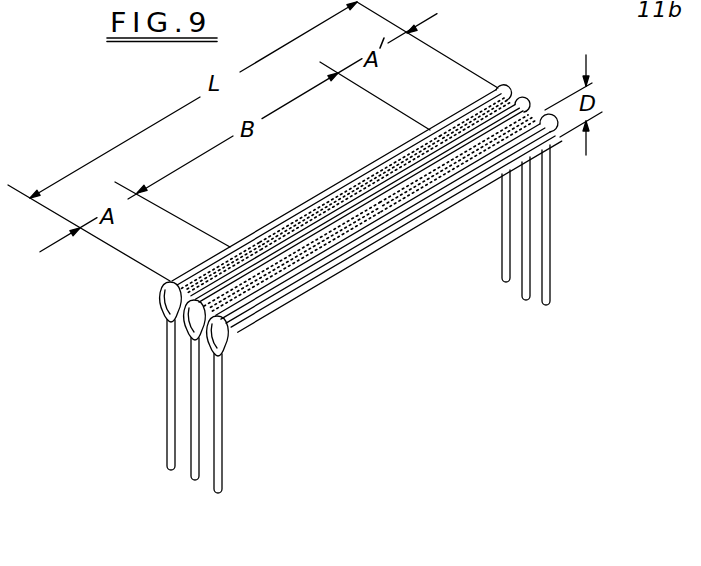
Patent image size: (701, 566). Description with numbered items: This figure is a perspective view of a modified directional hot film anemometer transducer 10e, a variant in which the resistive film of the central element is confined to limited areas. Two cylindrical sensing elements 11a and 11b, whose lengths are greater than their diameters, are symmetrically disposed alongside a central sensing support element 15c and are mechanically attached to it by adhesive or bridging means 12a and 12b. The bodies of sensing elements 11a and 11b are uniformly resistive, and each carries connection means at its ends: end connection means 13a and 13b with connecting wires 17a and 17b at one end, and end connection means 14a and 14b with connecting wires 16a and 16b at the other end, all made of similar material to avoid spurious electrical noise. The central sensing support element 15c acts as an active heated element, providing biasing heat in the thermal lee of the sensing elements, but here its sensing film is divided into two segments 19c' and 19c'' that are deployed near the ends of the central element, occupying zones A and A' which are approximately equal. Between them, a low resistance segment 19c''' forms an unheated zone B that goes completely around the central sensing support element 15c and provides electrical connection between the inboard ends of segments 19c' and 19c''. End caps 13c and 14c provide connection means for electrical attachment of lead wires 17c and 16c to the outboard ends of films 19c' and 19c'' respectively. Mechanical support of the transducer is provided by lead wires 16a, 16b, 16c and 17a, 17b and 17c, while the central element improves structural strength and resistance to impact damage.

The modified transducer embodiment 10e is at (397, 253).
The cylindrical sensing element 11a is at (266, 224).
The cylindrical sensing element 11b is at (307, 250).
The adhesive or bridging means 12a is at (308, 202).
The adhesive or bridging means 12b is at (292, 262).
The end connection means 13a is at (166, 303).
The end connection means 13b is at (230, 343).
The end cap 13c is at (191, 324).
The end connection means 14a is at (507, 87).
The end connection means 14b is at (557, 135).
The end cap 14c is at (528, 100).
The central sensing support element 15c is at (350, 212).
The connecting lead wire 16a is at (500, 273).
The connecting lead wire 16b is at (553, 307).
The lead wire 16c is at (527, 297).
The connecting lead wire 17a is at (167, 438).
The connecting lead wire 17b is at (224, 486).
The lead wire 17c is at (191, 483).
The sensing film segment 19c' is at (205, 263).
The sensing film segment 19c'' is at (464, 110).
The low resistance segment 19c''' is at (457, 193).